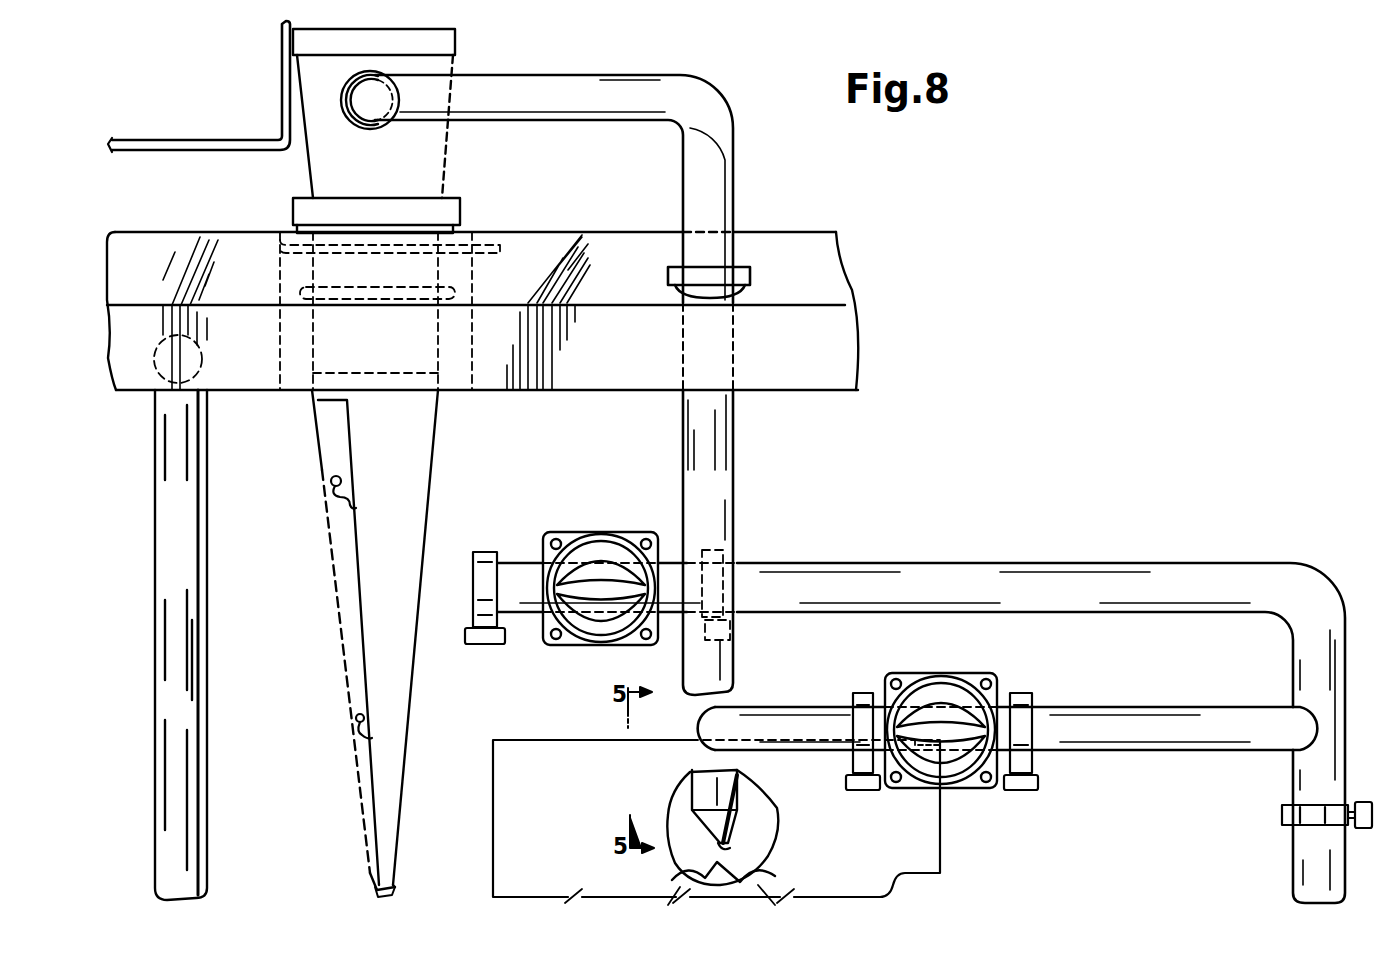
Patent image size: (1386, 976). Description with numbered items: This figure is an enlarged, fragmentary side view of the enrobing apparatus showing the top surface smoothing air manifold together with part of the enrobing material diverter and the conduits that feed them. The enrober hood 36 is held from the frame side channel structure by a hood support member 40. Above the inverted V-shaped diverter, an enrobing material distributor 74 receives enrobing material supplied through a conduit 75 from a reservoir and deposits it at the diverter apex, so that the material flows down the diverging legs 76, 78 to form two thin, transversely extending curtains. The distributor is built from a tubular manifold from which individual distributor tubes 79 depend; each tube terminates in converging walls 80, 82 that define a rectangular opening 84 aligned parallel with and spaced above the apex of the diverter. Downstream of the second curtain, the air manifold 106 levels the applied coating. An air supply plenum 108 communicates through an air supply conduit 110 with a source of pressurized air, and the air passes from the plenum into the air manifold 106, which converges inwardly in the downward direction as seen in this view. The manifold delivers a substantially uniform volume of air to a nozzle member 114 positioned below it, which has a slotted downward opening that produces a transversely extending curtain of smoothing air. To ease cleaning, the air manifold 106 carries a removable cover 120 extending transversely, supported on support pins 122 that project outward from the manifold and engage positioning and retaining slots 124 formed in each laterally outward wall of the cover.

The enrober hood 36 is at (842, 344).
The hood support member 40 is at (160, 532).
The enrobing material distributor 74 is at (740, 718).
The conduit 75 is at (1162, 750).
The downstream leg of diverter 76 is at (686, 869).
The leg of diverter 78 is at (752, 876).
The distributor tube 79 is at (742, 796).
The converging wall 80 is at (692, 818).
The converging wall 82 is at (746, 809).
The rectangular opening 84 is at (728, 851).
The air manifold 106 is at (425, 441).
The air supply plenum 108 is at (432, 178).
The air supply conduit 110 is at (735, 462).
The nozzle member 114 is at (390, 889).
The removable cover 120 is at (345, 589).
The support pin 122 is at (326, 481).
The positioning and retaining slot 124 is at (345, 498).